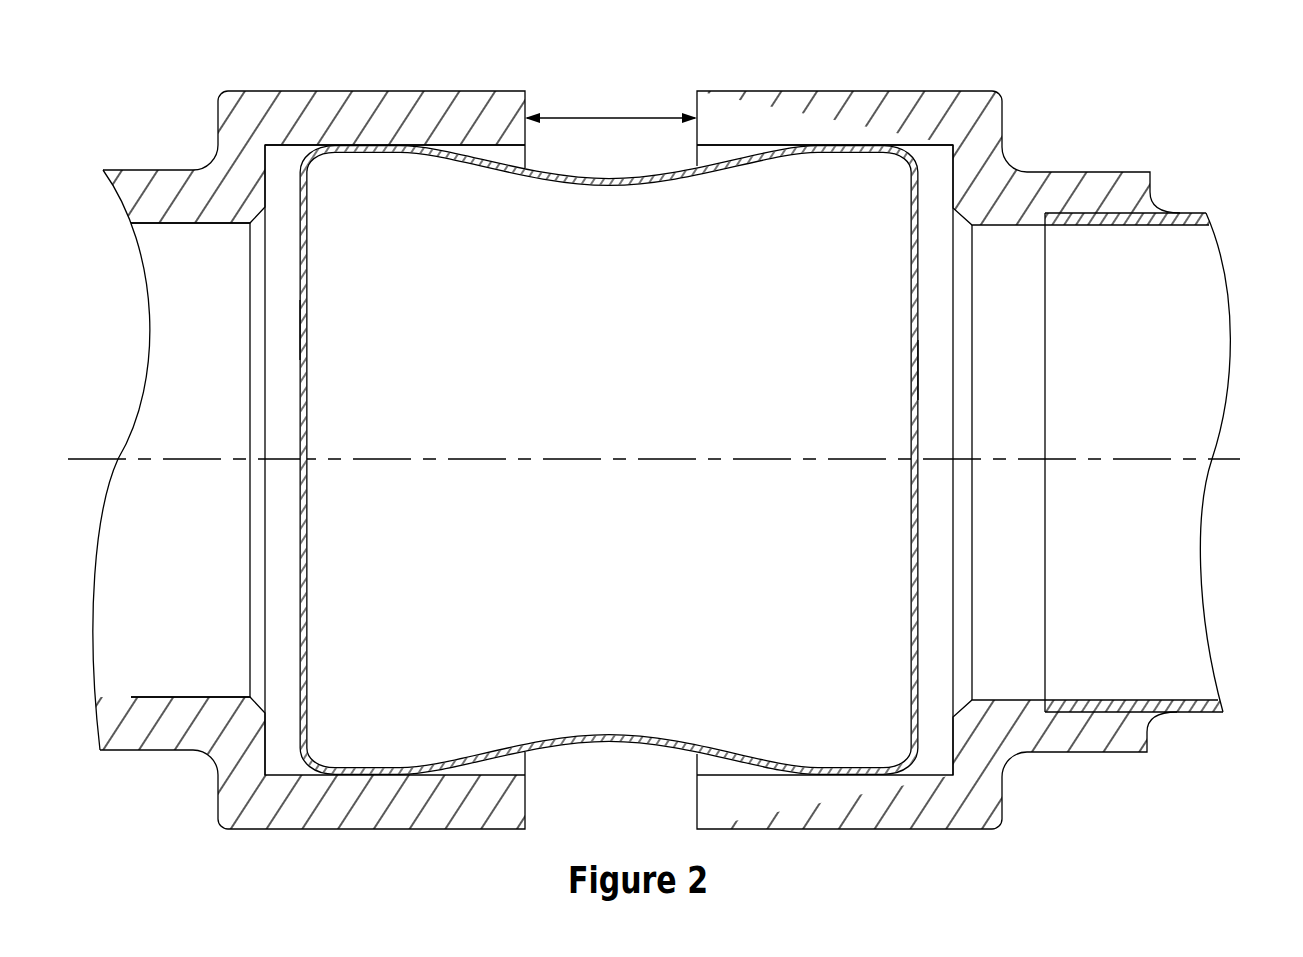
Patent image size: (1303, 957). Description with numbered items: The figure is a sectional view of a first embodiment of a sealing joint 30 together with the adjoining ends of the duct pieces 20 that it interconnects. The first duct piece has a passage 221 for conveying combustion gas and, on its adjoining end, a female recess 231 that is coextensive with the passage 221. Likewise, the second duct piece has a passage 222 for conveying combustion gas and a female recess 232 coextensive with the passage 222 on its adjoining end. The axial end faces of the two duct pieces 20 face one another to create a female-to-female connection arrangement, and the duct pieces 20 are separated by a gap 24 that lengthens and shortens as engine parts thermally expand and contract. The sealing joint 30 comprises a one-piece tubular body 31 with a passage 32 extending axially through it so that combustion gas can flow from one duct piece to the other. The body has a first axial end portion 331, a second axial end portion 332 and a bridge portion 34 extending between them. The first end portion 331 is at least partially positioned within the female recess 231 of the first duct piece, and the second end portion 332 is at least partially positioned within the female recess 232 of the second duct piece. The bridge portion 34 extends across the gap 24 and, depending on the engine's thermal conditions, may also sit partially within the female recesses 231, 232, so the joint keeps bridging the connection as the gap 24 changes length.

The duct pieces 20 is at (167, 158).
The passage 221 is at (155, 460).
The passage 222 is at (1124, 462).
The female recess 231 is at (248, 460).
The female recess 232 is at (979, 370).
The gap 24 is at (592, 118).
The sealing joint 30 is at (658, 460).
The one-piece tubular body 31 is at (925, 620).
The passage 32 is at (661, 425).
The first axial end portion 331 is at (395, 94).
The second axial end portion 332 is at (825, 97).
The bridge portion 34 is at (615, 745).